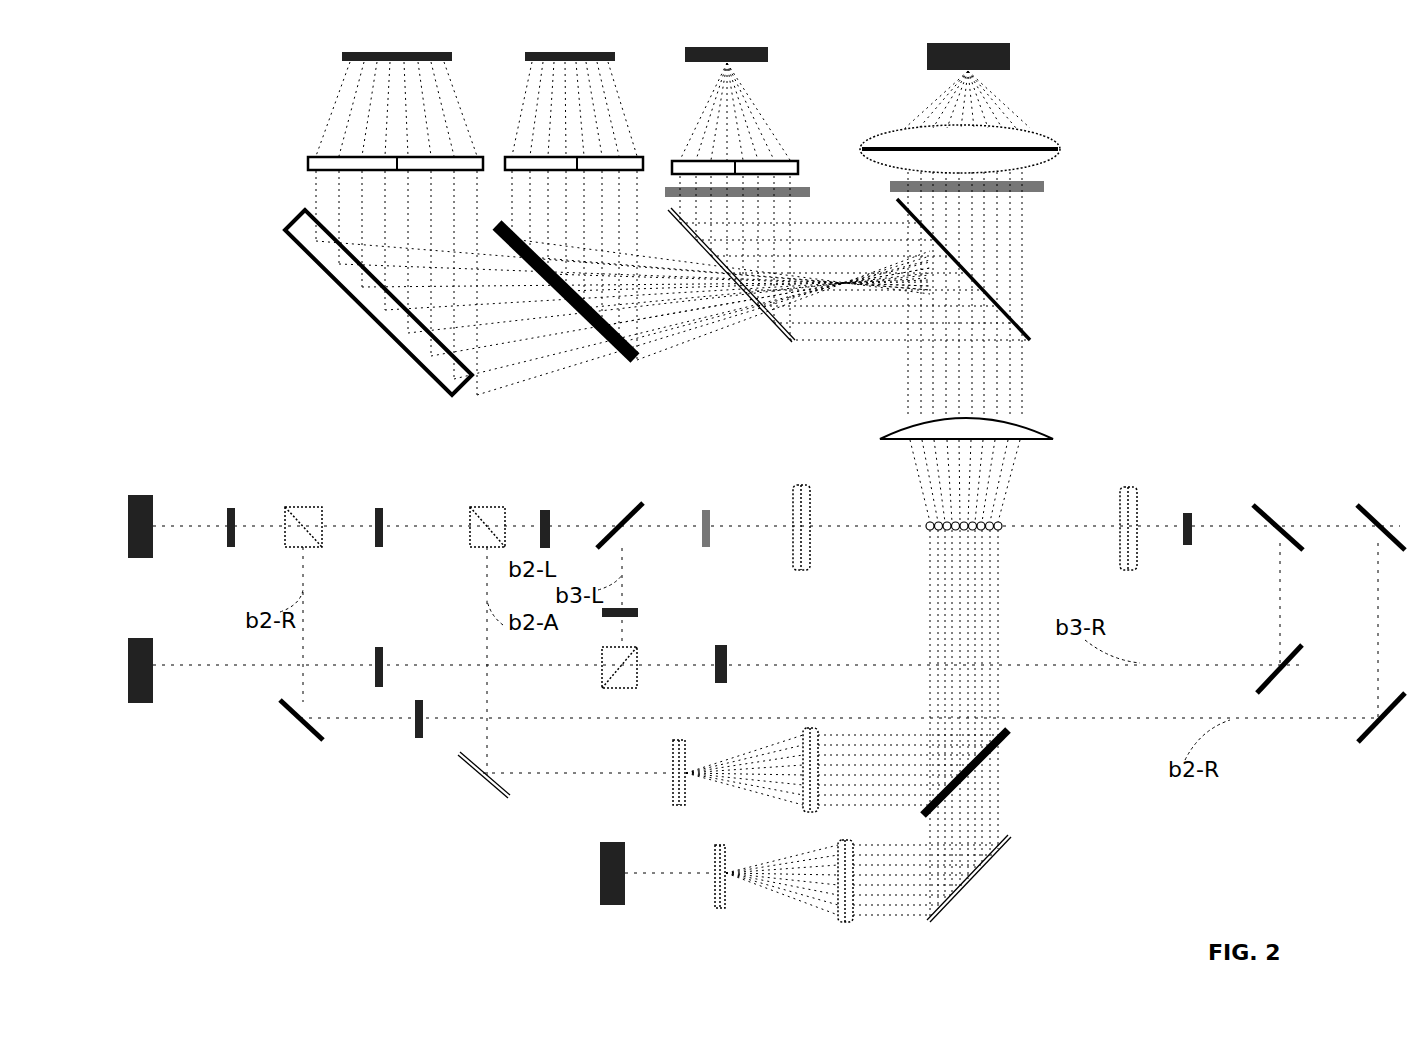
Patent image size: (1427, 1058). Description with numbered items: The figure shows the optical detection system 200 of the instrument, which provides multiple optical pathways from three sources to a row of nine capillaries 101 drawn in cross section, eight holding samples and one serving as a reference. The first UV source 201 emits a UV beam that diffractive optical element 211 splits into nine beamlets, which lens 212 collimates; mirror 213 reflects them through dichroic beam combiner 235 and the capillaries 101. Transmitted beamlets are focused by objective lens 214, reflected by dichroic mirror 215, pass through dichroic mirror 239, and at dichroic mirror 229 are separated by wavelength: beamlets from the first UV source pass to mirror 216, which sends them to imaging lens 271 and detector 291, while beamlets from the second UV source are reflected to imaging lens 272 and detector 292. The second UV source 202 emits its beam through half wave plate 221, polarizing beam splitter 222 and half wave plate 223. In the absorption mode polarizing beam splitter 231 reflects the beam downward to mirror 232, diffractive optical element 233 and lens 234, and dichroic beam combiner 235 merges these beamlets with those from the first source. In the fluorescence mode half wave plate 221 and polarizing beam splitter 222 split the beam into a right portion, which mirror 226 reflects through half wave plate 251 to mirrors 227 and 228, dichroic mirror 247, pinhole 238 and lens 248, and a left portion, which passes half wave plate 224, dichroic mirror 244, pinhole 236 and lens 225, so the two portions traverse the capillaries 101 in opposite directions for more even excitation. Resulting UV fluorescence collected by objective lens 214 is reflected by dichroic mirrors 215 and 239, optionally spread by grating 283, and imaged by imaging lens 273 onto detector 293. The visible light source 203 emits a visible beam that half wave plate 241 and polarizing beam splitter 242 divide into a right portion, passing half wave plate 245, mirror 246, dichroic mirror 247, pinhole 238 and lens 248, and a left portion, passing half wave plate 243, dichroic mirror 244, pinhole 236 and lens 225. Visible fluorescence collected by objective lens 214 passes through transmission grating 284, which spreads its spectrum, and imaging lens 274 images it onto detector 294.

The capillaries 101 is at (1002, 524).
The optical detection system 200 is at (221, 299).
The UV source 201 is at (600, 845).
The UV source 202 is at (153, 500).
The visible light source 203 is at (153, 645).
The diffractive optical element 211 is at (722, 910).
The lens 212 is at (848, 922).
The mirror 213 is at (1008, 845).
The objective lens 214 is at (1055, 437).
The dichroic mirror 215 is at (1033, 340).
The mirror 216 is at (358, 316).
The half wave plate 221 is at (238, 510).
The polarizing beam splitter 222 is at (322, 505).
The half wave plate 223 is at (383, 505).
The half wave plate 224 is at (550, 505).
The lens 225 is at (810, 490).
The mirror 226 is at (305, 740).
The mirror 227 is at (1368, 745).
The mirror 228 is at (1360, 506).
The dichroic mirror 229 is at (638, 358).
The polarizing beam splitter 231 is at (500, 506).
The mirror 232 is at (482, 795).
The diffractive optical element 233 is at (672, 760).
The lens 234 is at (810, 812).
The dichroic beam combiner 235 is at (1005, 745).
The pinhole 236 is at (712, 515).
The pinhole 238 is at (1192, 545).
The dichroic mirror 239 is at (778, 327).
The half wave plate 241 is at (375, 650).
The polarizing beam splitter 242 is at (637, 688).
The half wave plate 243 is at (660, 603).
The dichroic mirror 244 is at (643, 505).
The half wave plate 245 is at (728, 655).
The mirror 246 is at (1305, 650).
The dichroic mirror 247 is at (1253, 505).
The lens 248 is at (1140, 490).
The half wave plate 251 is at (415, 735).
The imaging lens 271 is at (305, 163).
The imaging lens 272 is at (645, 172).
The imaging lens 273 is at (672, 166).
The imaging lens 274 is at (1068, 162).
The grating 283 is at (830, 185).
The transmission grating 284 is at (1045, 194).
The detector 291 is at (352, 64).
The detector 292 is at (545, 62).
The detector 293 is at (718, 66).
The detector 294 is at (1017, 55).